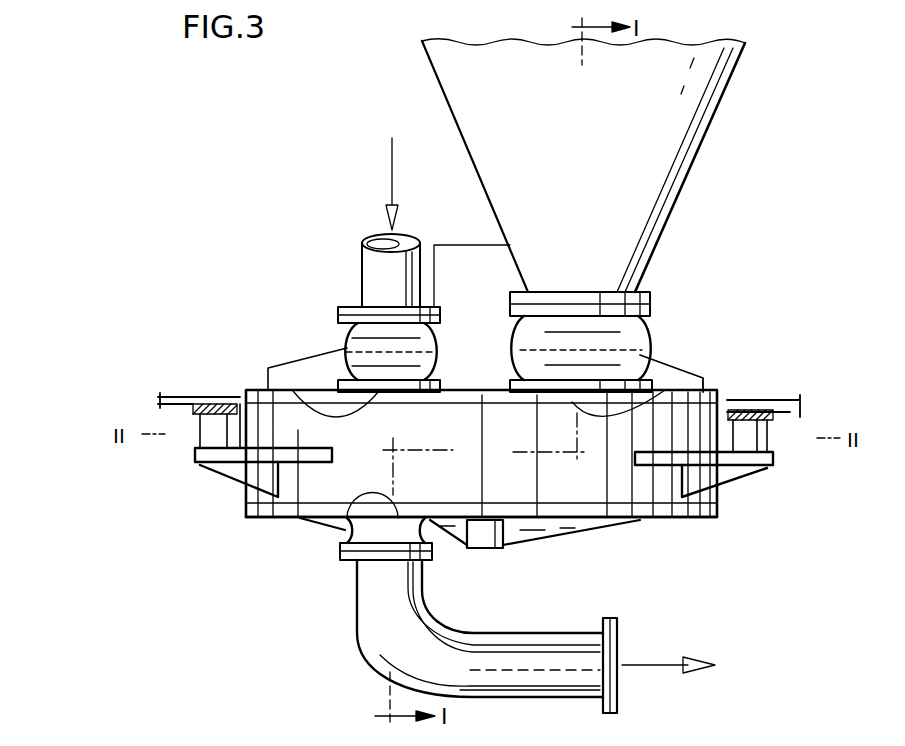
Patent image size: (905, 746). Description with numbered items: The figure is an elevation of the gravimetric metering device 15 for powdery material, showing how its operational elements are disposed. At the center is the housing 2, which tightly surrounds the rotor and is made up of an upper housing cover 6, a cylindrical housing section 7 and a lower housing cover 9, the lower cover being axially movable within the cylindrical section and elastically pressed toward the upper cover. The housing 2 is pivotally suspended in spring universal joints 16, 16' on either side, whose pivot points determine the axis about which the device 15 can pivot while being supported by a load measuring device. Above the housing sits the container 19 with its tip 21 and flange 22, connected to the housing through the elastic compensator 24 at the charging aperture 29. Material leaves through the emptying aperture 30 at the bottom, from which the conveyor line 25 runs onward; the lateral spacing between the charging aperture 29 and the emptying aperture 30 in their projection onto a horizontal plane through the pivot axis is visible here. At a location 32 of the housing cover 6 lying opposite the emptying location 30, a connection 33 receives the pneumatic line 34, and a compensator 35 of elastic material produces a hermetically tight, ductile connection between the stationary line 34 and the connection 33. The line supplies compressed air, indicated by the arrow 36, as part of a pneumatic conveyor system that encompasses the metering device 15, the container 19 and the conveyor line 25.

The housing 2 is at (722, 498).
The upper housing cover 6 is at (312, 395).
The cylindrical housing section 7 is at (545, 484).
The lower housing cover 9 is at (277, 515).
The device 15 is at (643, 548).
The spring universal joint 16 is at (245, 448).
The universal joint 16' is at (732, 450).
The container 19 is at (680, 122).
The tip 21 is at (670, 213).
The flange 22 is at (650, 313).
The elastic compensator 24 is at (647, 347).
The conveyor line 25 is at (483, 645).
The charging aperture 29 is at (668, 390).
The emptying aperture 30 is at (345, 525).
The location of the housing cover 32 is at (317, 403).
The connection 33 is at (437, 378).
The pneumatic line 34 is at (372, 268).
The compensator 35 is at (352, 327).
The arrow 36 is at (390, 173).